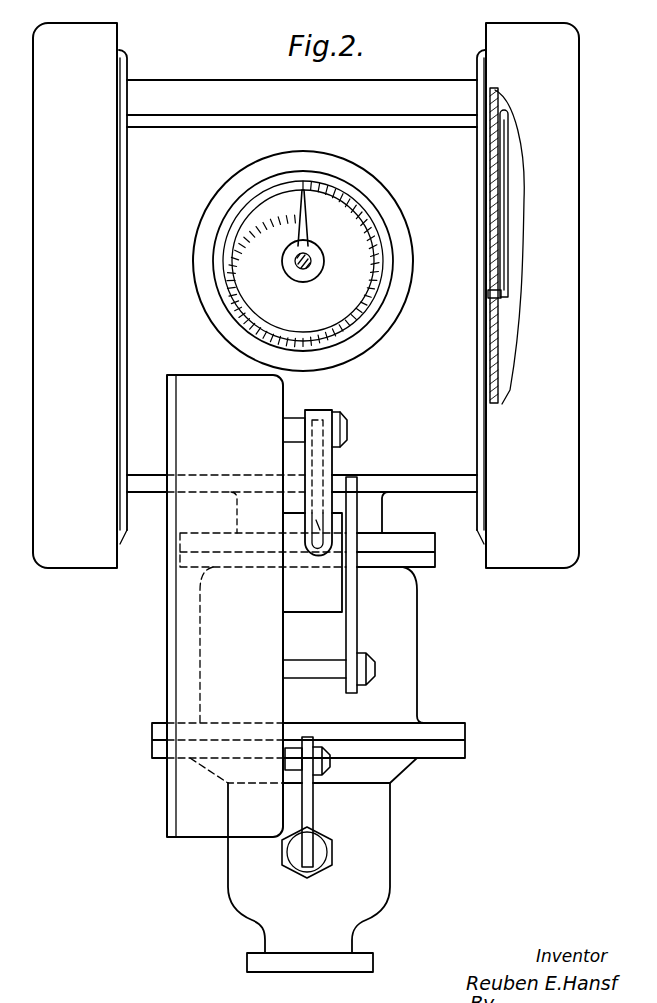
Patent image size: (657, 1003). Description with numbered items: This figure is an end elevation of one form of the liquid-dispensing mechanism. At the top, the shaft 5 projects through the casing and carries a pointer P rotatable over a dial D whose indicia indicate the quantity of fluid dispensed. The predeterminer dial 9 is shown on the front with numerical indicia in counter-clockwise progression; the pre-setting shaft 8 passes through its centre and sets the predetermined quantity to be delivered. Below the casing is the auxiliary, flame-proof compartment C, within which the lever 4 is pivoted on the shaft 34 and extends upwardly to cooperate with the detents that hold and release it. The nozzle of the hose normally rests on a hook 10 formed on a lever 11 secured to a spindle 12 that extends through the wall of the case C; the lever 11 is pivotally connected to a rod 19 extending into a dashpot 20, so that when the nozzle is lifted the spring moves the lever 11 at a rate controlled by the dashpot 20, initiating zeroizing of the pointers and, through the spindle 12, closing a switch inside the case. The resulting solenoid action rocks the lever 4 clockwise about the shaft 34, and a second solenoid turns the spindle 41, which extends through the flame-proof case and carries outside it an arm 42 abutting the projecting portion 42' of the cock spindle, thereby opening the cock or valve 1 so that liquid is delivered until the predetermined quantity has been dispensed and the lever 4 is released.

The cock or valve 1 is at (303, 865).
The lever 4 is at (357, 633).
The shaft 5 is at (489, 293).
The shaft 8 is at (296, 259).
The dial 9 is at (303, 261).
The hook 10 is at (333, 469).
The lever 11 is at (348, 441).
The spindle 12 is at (291, 424).
The rod 19 is at (318, 526).
The dashpot 20 is at (322, 586).
The shaft 34 is at (315, 670).
The spindle 41 is at (290, 762).
The arm 42 is at (325, 802).
The projecting portion of the cock spindle 42' is at (295, 860).
The flame-proof case C is at (225, 606).
The dial D is at (497, 341).
The pointer P is at (509, 173).